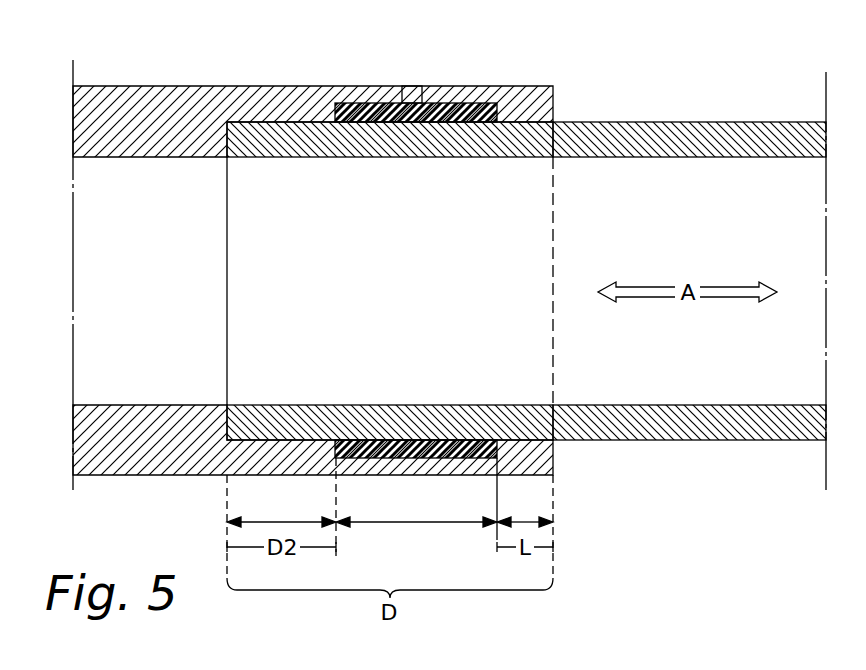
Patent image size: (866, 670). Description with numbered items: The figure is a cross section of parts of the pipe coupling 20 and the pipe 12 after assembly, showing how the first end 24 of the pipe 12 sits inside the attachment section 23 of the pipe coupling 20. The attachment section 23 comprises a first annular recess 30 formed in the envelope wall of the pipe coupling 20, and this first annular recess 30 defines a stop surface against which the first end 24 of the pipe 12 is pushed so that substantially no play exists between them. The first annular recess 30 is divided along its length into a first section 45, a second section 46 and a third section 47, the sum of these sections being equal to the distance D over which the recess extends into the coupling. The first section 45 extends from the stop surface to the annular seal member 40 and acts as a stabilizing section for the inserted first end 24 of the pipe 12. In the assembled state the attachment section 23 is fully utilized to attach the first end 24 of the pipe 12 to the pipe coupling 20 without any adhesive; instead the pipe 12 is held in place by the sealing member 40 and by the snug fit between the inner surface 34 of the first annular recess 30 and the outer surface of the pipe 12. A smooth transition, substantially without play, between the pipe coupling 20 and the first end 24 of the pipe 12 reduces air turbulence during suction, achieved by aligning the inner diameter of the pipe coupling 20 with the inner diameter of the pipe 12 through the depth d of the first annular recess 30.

The pipe 12 is at (696, 113).
The pipe coupling 20 is at (493, 62).
The attachment section 23 is at (491, 204).
The first end 24 is at (473, 345).
The first annular recess 30 is at (255, 121).
The inner surface 34 is at (160, 286).
The annular seal member 40 is at (382, 103).
The first section 45 is at (281, 518).
The second section 46 is at (416, 499).
The third section 47 is at (525, 526).